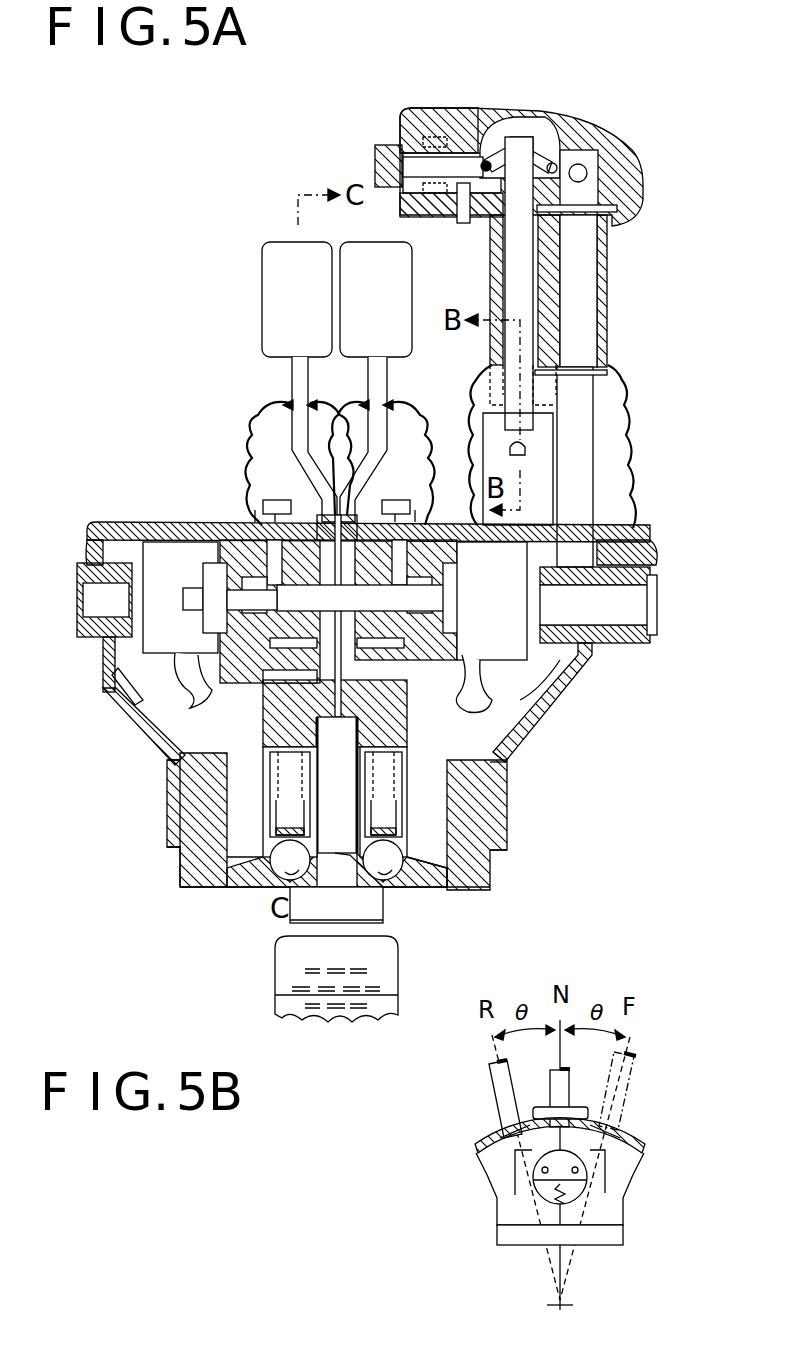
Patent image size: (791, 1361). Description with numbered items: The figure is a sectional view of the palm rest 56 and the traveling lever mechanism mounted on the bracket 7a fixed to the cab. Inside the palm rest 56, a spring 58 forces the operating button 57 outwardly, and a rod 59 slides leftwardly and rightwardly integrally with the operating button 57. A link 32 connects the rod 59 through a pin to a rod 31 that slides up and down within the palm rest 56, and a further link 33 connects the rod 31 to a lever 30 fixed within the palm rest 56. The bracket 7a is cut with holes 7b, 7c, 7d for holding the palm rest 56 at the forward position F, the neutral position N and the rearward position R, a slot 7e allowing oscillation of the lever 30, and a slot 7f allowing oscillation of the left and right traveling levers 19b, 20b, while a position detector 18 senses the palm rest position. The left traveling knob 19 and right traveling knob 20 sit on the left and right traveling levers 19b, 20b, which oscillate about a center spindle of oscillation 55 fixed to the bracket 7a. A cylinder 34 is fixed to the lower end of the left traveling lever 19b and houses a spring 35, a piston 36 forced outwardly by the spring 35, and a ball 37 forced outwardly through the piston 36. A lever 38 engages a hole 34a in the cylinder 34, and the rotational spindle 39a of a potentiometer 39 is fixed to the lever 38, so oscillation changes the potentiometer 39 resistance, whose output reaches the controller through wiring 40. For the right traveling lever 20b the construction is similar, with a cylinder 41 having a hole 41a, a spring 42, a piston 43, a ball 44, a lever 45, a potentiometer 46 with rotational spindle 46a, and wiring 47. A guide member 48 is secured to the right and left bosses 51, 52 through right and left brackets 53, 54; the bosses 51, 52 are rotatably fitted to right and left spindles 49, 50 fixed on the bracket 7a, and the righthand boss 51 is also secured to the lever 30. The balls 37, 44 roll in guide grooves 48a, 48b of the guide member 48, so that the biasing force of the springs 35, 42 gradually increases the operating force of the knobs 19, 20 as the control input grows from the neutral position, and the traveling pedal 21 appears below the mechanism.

In FIG. 5A, the bracket 7a is at (128, 522).
In FIG. 5B, the bracket 7a is at (645, 1148).
In FIG. 5B, the hole 7b is at (615, 1145).
In FIG. 5B, the hole 7c is at (515, 1110).
In FIG. 5B, the hole 7d is at (505, 1130).
In FIG. 5A, the slot 7e is at (630, 555).
In FIG. 5A, the slot 7f is at (305, 518).
In FIG. 5B, the position detector 18 is at (580, 1192).
In FIG. 5A, the left traveling knob 19 is at (262, 280).
In FIG. 5A, the left traveling lever 19b is at (292, 380).
In FIG. 5A, the right traveling knob 20 is at (412, 290).
In FIG. 5A, the right traveling lever 20b is at (387, 380).
In FIG. 5A, the traveling pedal 21 is at (398, 985).
In FIG. 5A, the lever 30 is at (590, 287).
In FIG. 5A, the rod 31 is at (540, 207).
In FIG. 5B, the rod 31 is at (550, 1088).
In FIG. 5A, the link 32 is at (508, 120).
In FIG. 5A, the link 33 is at (562, 142).
In FIG. 5A, the cylinder 34 is at (205, 760).
In FIG. 5A, the hole 34a is at (250, 705).
In FIG. 5A, the spring 35 is at (175, 830).
In FIG. 5A, the piston 36 is at (187, 887).
In FIG. 5A, the ball 37 is at (255, 885).
In FIG. 5A, the lever 38 is at (200, 712).
In FIG. 5A, the potentiometer 39 is at (108, 655).
In FIG. 5A, the rotational spindle 39a is at (115, 685).
In FIG. 5A, the wiring 40 is at (280, 600).
In FIG. 5A, the cylinder 41 is at (507, 805).
In FIG. 5A, the hole 41a is at (368, 688).
In FIG. 5A, the spring 42 is at (490, 840).
In FIG. 5A, the piston 43 is at (455, 866).
In FIG. 5A, the ball 44 is at (465, 885).
In FIG. 5A, the lever 45 is at (520, 745).
In FIG. 5A, the potentiometer 46 is at (585, 690).
In FIG. 5A, the rotational spindle 46a is at (560, 670).
In FIG. 5A, the wiring 47 is at (492, 705).
In FIG. 5A, the guide member 48 is at (405, 880).
In FIG. 5A, the guide groove 48a is at (383, 905).
In FIG. 5A, the guide groove 48b is at (420, 890).
In FIG. 5A, the right spindle 49 is at (658, 615).
In FIG. 5A, the left spindle 50 is at (77, 590).
In FIG. 5A, the righthand boss 51 is at (620, 640).
In FIG. 5A, the left boss 52 is at (90, 545).
In FIG. 5A, the right bracket 53 is at (525, 760).
In FIG. 5A, the left bracket 54 is at (172, 850).
In FIG. 5A, the center spindle of oscillation 55 is at (290, 592).
In FIG. 5A, the palm rest 56 is at (643, 162).
In FIG. 5A, the operating button 57 is at (375, 162).
In FIG. 5A, the spring 58 is at (418, 108).
In FIG. 5A, the rod 59 is at (481, 112).